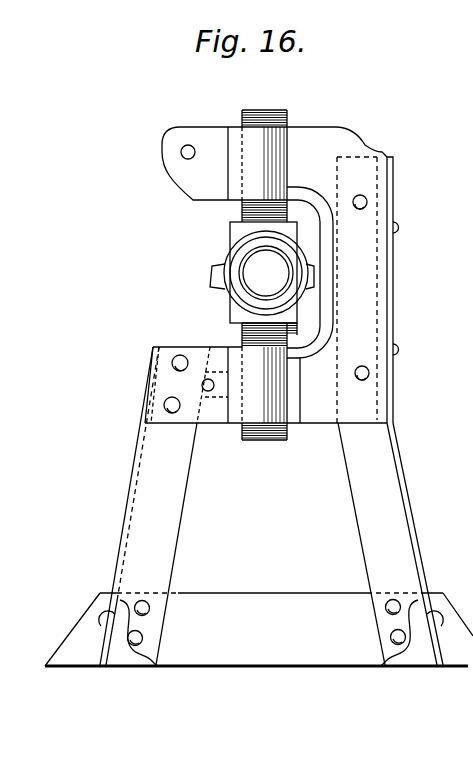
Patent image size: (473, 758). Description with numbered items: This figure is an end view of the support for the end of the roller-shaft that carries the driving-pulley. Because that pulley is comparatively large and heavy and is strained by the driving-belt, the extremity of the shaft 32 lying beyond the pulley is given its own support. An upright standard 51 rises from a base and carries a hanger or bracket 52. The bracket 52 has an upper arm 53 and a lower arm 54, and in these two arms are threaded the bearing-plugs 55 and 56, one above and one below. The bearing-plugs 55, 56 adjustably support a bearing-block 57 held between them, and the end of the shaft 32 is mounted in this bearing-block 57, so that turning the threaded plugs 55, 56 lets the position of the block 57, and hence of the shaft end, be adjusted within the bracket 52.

The standard 51 is at (393, 497).
The hanger or bracket 52 is at (358, 262).
The upper arm 53 is at (208, 186).
The lower arm 54 is at (235, 424).
The bearing-plug 55 is at (287, 117).
The bearing-plug 56 is at (276, 440).
The bearing-block 57 is at (225, 293).
The shaft 32 is at (251, 272).